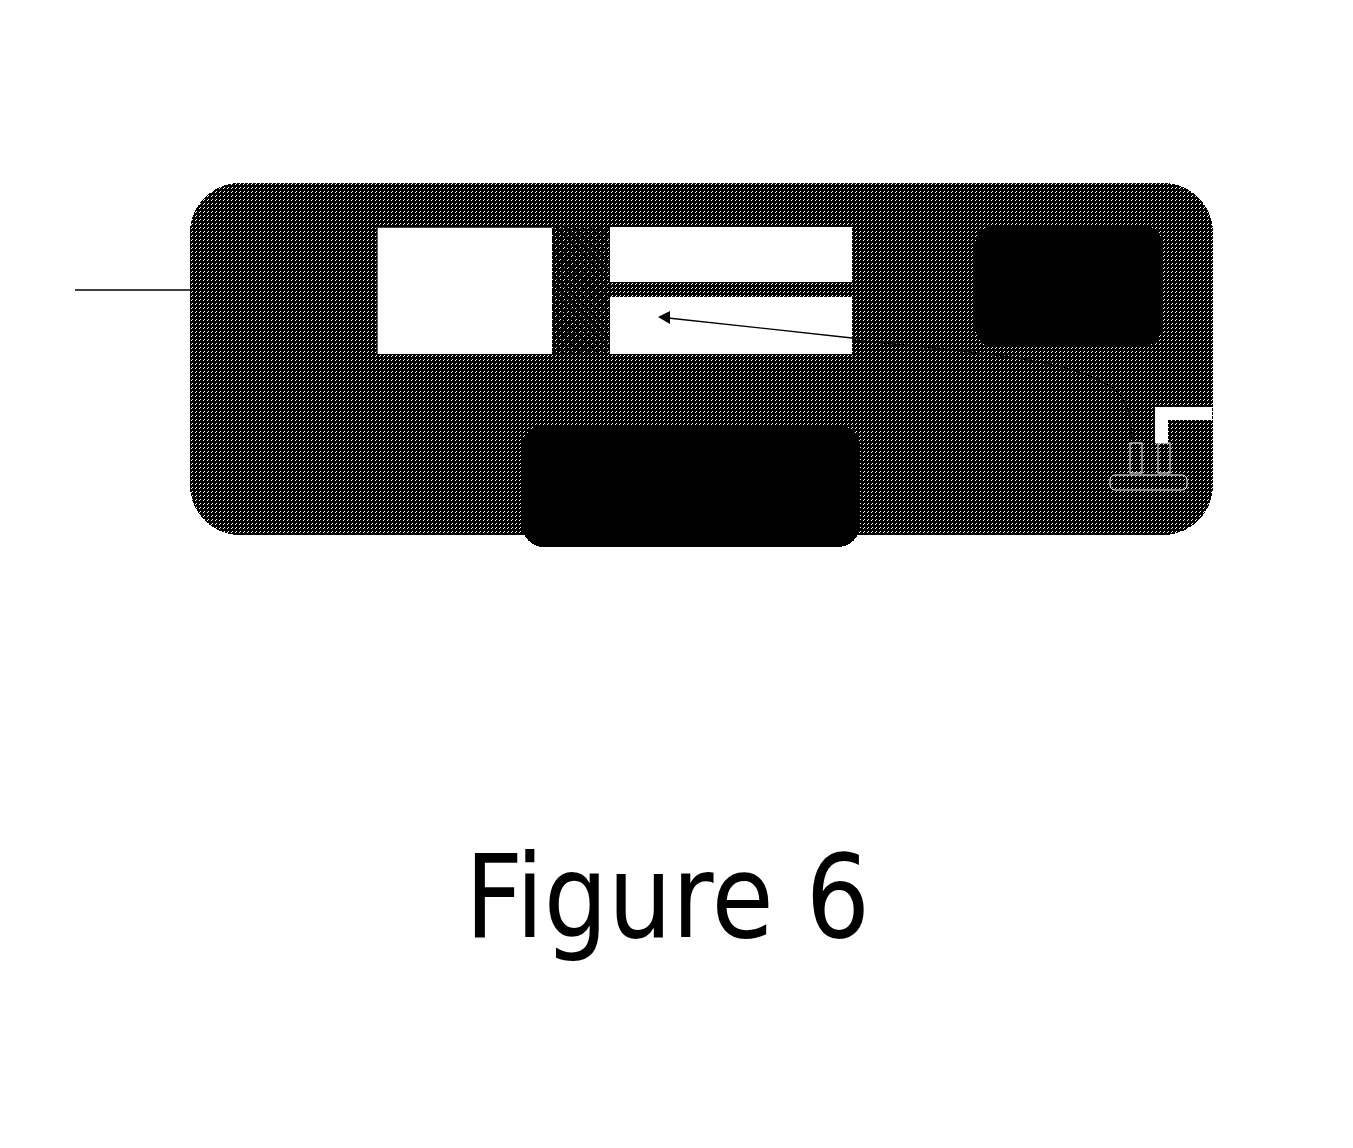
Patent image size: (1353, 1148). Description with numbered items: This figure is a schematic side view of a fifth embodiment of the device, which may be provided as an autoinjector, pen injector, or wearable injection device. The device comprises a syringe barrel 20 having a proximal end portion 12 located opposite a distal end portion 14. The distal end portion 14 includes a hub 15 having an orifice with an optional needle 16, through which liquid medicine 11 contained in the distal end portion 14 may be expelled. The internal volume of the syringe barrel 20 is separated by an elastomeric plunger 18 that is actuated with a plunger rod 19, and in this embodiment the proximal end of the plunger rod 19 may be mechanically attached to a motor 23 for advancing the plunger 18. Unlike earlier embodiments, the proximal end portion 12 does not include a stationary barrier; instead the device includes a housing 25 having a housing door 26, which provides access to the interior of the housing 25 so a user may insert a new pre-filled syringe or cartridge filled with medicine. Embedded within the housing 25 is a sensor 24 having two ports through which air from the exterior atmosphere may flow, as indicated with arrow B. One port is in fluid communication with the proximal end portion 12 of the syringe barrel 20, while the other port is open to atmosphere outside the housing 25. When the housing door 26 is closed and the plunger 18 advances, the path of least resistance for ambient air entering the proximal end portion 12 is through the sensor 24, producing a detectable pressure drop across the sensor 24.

The liquid medicine 11 is at (500, 330).
The proximal end portion 12 is at (853, 242).
The distal end portion 14 is at (375, 243).
The hub 15 is at (320, 268).
The needle 16 is at (142, 290).
The elastomeric plunger 18 is at (611, 245).
The plunger rod 19 is at (772, 285).
The syringe barrel 20 is at (478, 226).
The motor 23 is at (1157, 282).
The sensor 24 is at (1155, 510).
The housing 25 is at (190, 539).
The housing door 26 is at (637, 552).
The arrow B is at (1212, 418).